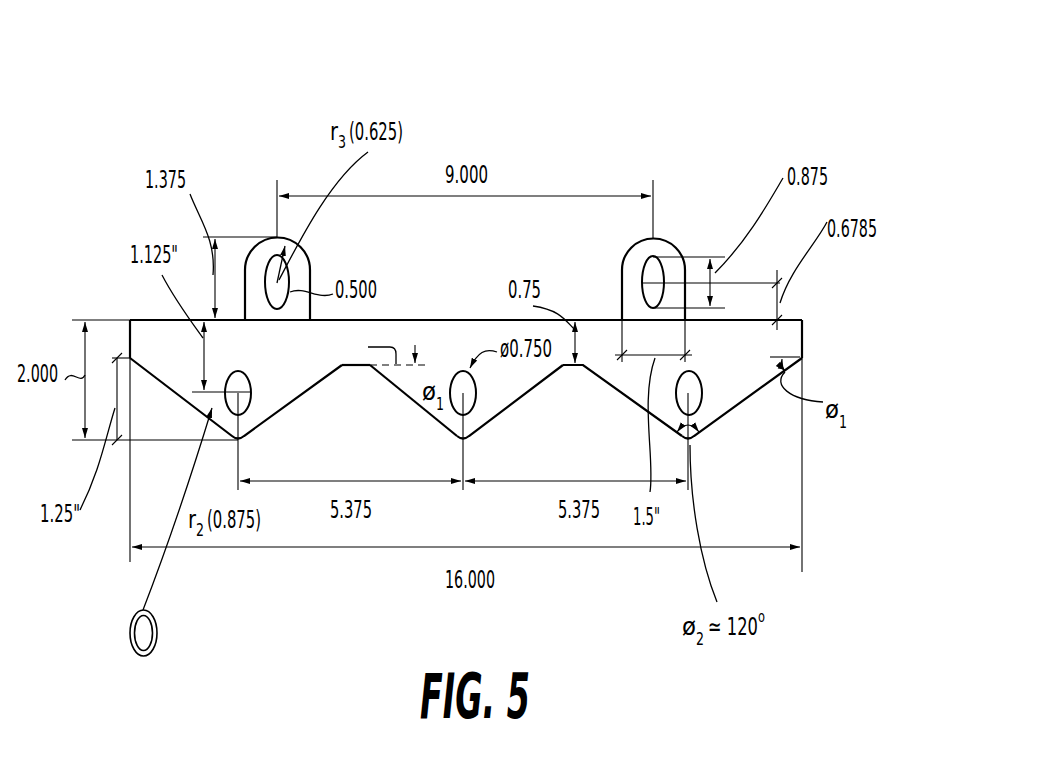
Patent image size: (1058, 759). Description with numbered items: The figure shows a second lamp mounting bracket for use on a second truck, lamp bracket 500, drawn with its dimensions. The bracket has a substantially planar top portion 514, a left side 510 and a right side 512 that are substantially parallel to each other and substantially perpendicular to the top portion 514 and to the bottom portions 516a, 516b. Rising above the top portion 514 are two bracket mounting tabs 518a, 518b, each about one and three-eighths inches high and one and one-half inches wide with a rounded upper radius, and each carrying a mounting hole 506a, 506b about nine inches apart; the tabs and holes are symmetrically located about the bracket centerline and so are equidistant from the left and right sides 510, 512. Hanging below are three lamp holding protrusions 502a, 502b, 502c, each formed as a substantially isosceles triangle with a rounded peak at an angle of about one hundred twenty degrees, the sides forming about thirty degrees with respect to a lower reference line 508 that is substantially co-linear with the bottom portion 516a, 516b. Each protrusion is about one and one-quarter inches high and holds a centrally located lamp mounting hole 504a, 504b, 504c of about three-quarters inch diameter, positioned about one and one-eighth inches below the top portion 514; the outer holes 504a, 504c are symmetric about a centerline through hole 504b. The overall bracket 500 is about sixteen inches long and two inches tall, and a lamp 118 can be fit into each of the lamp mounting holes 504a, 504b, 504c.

The lamp bracket 500 is at (668, 80).
The lamp holding protrusion 502a is at (246, 440).
The lamp holding protrusion 502b is at (470, 437).
The lamp holding protrusion 502c is at (695, 440).
The lamp mounting hole 504a is at (250, 376).
The lamp mounting hole 504b is at (477, 388).
The lamp mounting hole 504c is at (700, 376).
The mounting hole 506a is at (263, 265).
The mounting hole 506b is at (631, 250).
The lower reference line 508 is at (353, 347).
The left side 510 is at (128, 338).
The right side 512 is at (805, 345).
The top portion 514 is at (440, 320).
The bottom portion 516a is at (408, 409).
The bottom portion 516b is at (578, 367).
The bracket mounting tab 518a is at (295, 278).
The bracket mounting tab 518b is at (668, 240).
The lamp 118 is at (157, 637).